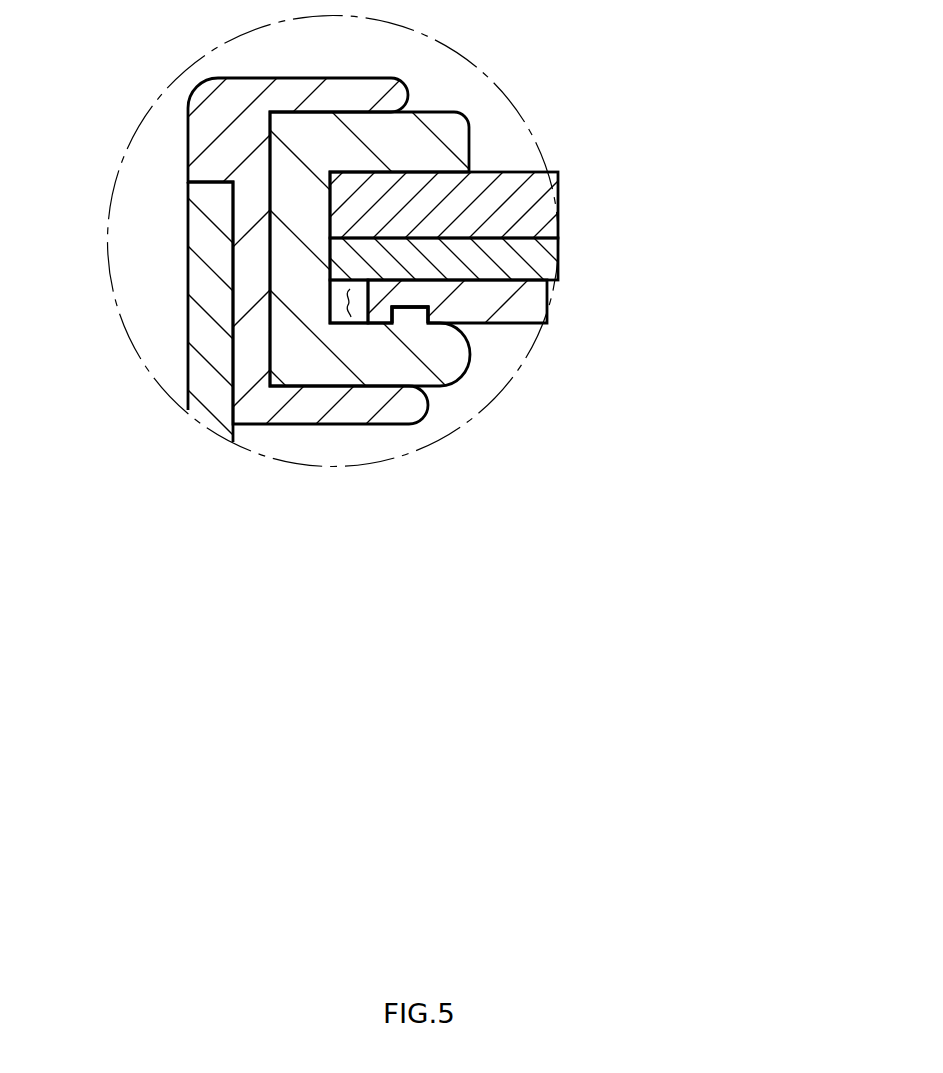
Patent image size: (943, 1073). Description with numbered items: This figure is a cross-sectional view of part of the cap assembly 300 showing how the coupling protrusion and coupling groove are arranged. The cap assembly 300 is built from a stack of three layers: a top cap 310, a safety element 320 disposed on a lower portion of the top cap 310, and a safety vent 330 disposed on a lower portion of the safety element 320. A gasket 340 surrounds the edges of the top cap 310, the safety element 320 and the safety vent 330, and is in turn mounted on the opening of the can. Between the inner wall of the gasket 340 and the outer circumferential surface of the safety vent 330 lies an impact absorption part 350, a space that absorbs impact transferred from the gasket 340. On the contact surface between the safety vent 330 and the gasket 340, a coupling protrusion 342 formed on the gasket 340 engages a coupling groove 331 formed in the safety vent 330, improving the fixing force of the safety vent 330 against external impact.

The cap assembly 300 is at (526, 260).
The top cap 310 is at (540, 197).
The safety element 320 is at (556, 258).
The safety vent 330 is at (537, 308).
The coupling groove 331 is at (427, 342).
The gasket 340 is at (446, 145).
The coupling protrusion 342 is at (412, 318).
The impact absorption part 350 is at (343, 303).